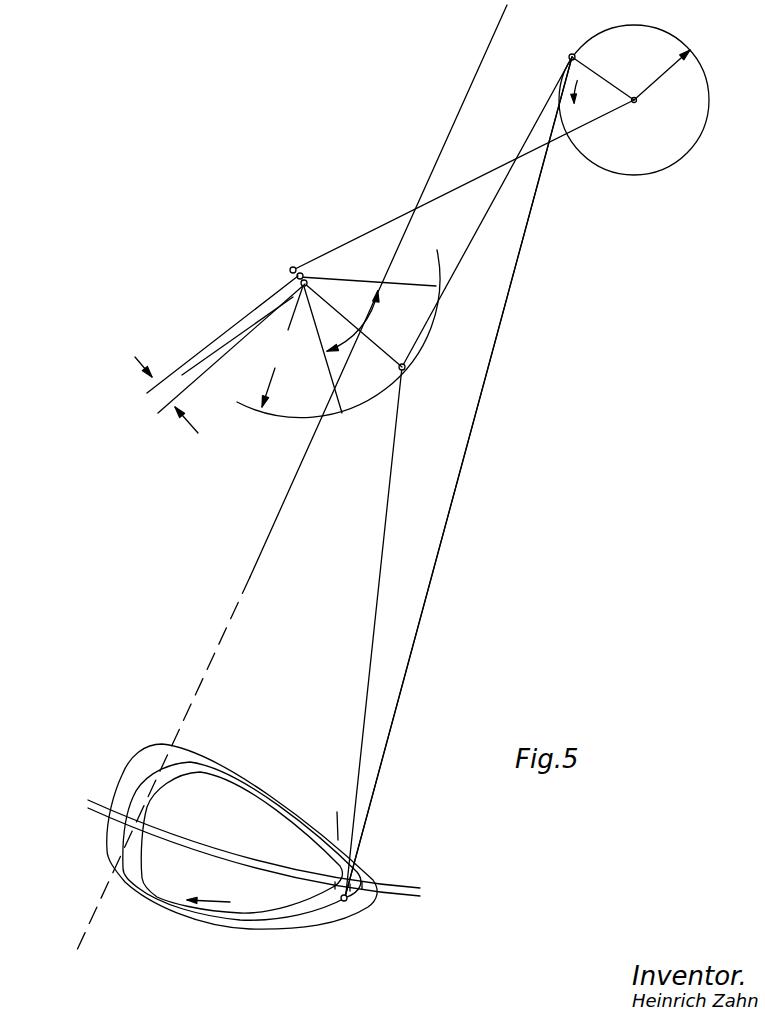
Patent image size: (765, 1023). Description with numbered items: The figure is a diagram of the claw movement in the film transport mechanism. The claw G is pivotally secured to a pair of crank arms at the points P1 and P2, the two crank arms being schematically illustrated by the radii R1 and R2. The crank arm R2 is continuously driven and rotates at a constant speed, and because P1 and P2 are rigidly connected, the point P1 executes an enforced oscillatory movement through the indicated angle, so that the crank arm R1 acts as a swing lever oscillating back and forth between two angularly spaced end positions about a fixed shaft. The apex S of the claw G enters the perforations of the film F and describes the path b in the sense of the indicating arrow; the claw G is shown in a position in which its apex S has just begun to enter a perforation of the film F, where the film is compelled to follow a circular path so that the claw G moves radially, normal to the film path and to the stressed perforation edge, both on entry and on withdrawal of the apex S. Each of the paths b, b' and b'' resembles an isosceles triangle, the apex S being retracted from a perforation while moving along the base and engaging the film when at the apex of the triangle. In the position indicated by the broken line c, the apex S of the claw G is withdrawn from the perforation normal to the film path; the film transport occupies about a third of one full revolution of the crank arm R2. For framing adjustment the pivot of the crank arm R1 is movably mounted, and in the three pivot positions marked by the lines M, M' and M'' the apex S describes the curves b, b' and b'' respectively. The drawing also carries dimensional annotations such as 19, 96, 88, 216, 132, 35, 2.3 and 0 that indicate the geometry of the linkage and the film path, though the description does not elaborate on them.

The radius of circle about pivot 19 is at (634, 100).
The pivot point P2 is at (564, 66).
The crank arm R2 is at (590, 64).
The distance 96 is at (463, 185).
The distance 88 is at (487, 212).
The claw G is at (508, 301).
The distance 216 is at (458, 477).
The distance 132 is at (373, 630).
The broken line c is at (292, 477).
The pivot point P1 is at (415, 378).
The crank arm R1 is at (366, 330).
The radius 35 arc 35 is at (338, 334).
The line M' is at (293, 257).
The line M'' is at (278, 275).
The line M is at (227, 344).
The slot width 2.3 is at (166, 395).
The path b'' is at (242, 865).
The path b is at (242, 876).
The path b' is at (241, 842).
The film F is at (265, 852).
The zero position 0 is at (337, 840).
The apex of the claw S is at (347, 901).